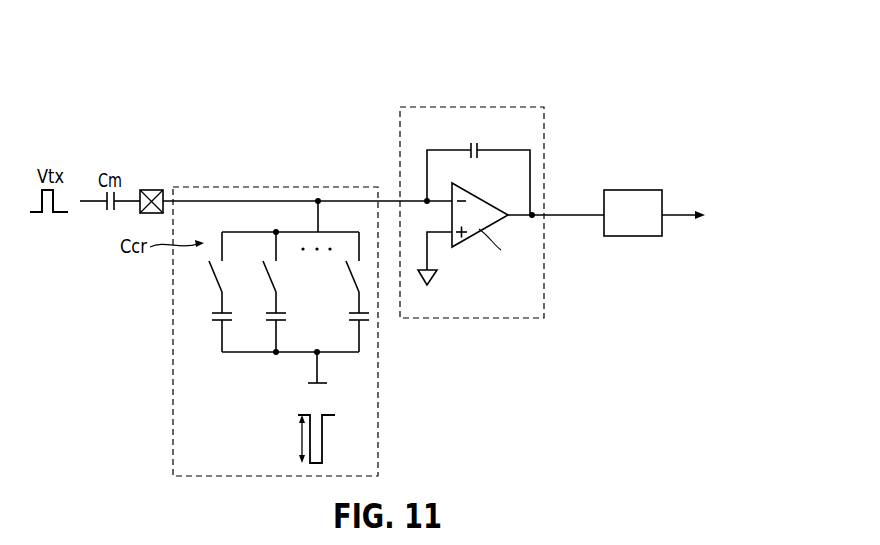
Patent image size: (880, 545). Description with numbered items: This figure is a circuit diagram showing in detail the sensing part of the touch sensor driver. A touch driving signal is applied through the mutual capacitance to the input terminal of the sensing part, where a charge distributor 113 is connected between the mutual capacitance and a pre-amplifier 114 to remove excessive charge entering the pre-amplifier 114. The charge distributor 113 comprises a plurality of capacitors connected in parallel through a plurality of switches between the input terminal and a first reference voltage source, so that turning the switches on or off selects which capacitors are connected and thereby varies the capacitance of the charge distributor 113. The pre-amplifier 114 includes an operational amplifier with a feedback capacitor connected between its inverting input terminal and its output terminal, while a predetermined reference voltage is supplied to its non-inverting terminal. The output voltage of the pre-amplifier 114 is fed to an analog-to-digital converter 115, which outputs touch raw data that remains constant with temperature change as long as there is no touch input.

The charge distributor 113 is at (305, 187).
The pre-amplifier 114 is at (472, 105).
The ADC 115 is at (632, 190).